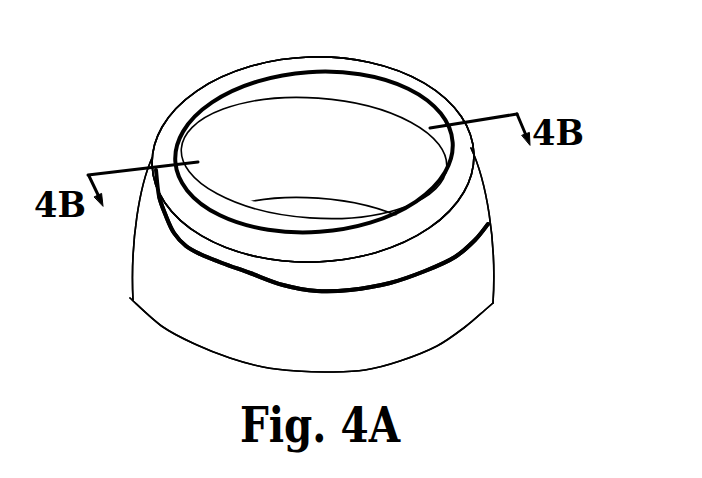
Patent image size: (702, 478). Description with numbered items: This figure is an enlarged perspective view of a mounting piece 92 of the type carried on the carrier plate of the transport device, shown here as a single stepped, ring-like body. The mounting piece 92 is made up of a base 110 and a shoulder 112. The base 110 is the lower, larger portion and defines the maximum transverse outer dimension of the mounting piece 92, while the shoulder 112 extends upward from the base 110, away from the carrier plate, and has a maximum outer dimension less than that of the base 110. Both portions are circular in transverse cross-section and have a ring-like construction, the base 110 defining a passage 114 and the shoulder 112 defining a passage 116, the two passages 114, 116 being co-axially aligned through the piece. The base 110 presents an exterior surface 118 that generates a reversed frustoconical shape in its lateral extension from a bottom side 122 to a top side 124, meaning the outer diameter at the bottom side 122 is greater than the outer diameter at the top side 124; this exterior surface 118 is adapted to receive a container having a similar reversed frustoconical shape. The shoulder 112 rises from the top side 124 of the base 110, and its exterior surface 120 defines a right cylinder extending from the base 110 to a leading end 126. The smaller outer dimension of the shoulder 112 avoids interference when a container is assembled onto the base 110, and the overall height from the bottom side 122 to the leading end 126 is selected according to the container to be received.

The mounting piece 92 is at (242, 26).
The leading end 126 is at (168, 124).
The passage 116 is at (358, 86).
The passage 114 is at (401, 178).
The shoulder 112 is at (455, 192).
The top side 124 is at (150, 247).
The exterior surface 120 is at (218, 228).
The base 110 is at (470, 262).
The bottom side 122 is at (457, 337).
The exterior surface 118 is at (214, 318).